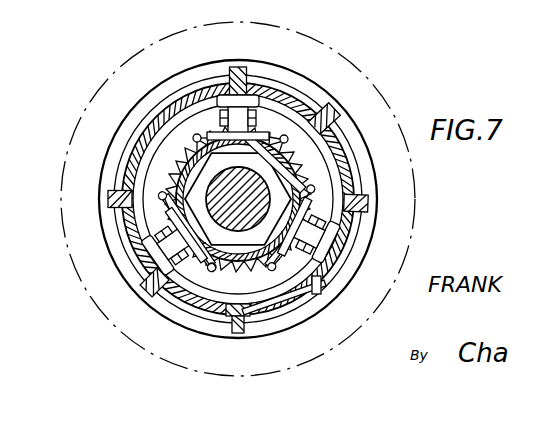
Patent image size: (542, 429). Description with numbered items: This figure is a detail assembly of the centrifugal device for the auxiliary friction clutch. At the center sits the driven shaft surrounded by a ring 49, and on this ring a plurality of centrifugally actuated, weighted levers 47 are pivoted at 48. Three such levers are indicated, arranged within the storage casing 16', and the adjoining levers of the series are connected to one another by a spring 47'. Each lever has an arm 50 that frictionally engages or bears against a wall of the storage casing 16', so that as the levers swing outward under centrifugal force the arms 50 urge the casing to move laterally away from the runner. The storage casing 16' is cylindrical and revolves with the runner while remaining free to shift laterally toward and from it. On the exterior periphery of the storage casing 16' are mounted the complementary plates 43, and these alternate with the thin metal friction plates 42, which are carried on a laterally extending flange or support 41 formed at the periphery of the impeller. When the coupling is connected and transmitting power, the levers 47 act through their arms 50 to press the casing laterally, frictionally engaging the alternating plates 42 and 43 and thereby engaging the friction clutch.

The flange or support 41 is at (238, 169).
The friction plates 42 is at (261, 44).
The complementary plates 43 is at (314, 90).
The weighted levers 47 is at (203, 85).
The spring 47' is at (172, 183).
The pivot 48 is at (145, 232).
The ring 49 is at (208, 268).
The storage casing 16' is at (294, 199).
The arms 50 is at (353, 237).